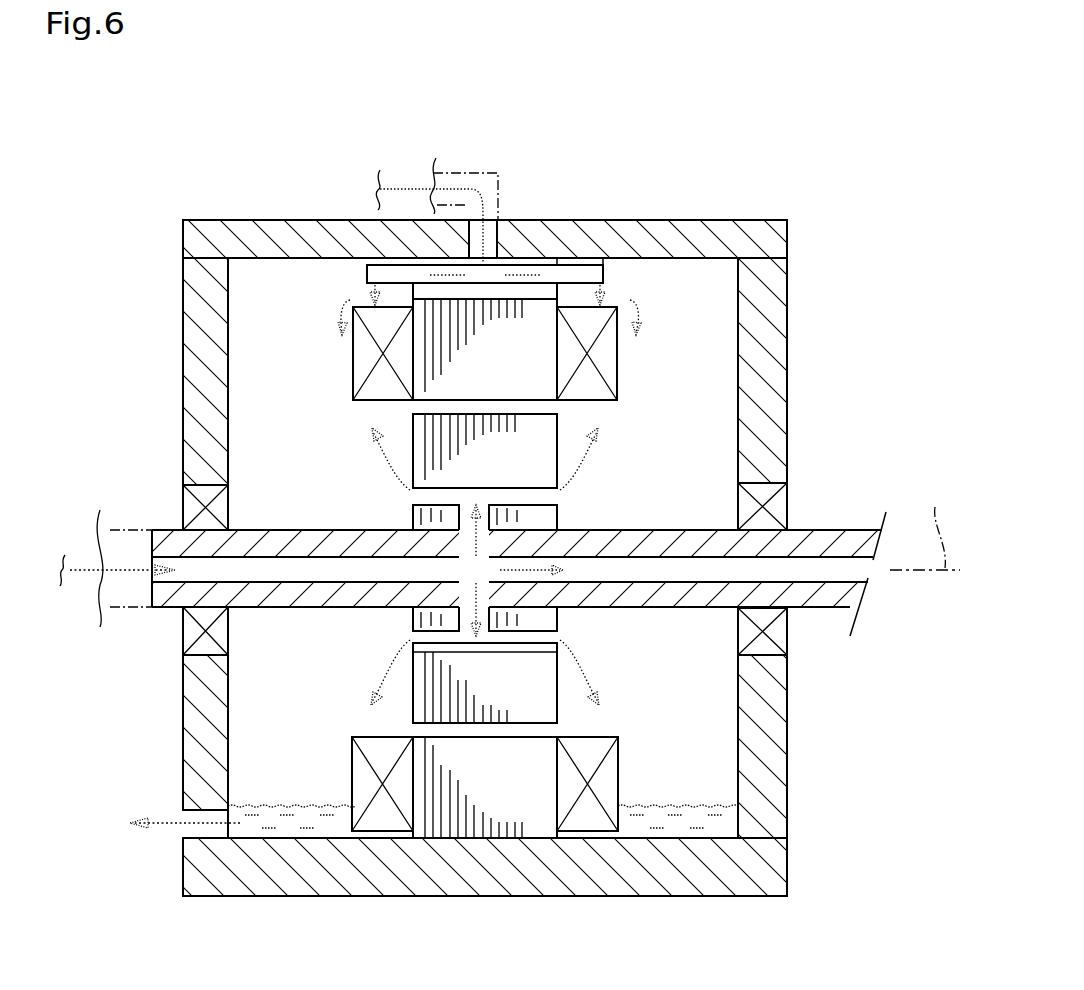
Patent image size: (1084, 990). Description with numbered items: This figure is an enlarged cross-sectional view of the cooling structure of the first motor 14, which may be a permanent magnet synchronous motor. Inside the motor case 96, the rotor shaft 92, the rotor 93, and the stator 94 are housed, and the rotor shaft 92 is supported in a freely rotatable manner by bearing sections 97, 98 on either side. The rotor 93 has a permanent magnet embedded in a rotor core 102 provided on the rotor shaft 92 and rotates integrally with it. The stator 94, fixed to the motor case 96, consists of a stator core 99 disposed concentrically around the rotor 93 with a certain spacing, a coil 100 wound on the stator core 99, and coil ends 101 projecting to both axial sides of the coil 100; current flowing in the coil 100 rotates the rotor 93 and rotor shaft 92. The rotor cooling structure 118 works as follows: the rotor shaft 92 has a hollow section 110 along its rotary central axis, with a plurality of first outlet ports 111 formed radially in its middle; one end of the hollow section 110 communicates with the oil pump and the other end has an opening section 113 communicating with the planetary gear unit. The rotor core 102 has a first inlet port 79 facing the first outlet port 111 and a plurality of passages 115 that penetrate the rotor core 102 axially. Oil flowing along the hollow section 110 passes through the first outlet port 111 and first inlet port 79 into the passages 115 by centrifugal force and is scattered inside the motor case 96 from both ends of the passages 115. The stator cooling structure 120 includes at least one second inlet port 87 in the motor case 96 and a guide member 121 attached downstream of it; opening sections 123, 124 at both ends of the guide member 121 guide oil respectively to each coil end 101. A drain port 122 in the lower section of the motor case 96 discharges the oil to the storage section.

The first motor 14 is at (519, 519).
The first inlet port 79 is at (460, 625).
The second inlet port 87 is at (471, 194).
The rotor shaft 92 is at (510, 560).
The rotor 93 is at (496, 565).
The stator 94 is at (626, 367).
The motor case 96 is at (773, 302).
The bearing section 97 is at (218, 630).
The bearing section 98 is at (755, 640).
The stator core 99 is at (523, 372).
The coil 100 is at (378, 355).
The coil end 101 is at (355, 393).
The rotor core 102 is at (537, 430).
The hollow section 110 is at (342, 575).
The first outlet port 111 is at (490, 548).
The opening section 113 is at (848, 583).
The passage 115 is at (539, 628).
The rotor cooling structure 118 is at (708, 486).
The stator cooling structure 120 is at (480, 551).
The guide member 121 is at (621, 248).
The drain port 122 is at (198, 809).
The opening section 123 is at (496, 234).
The opening section 124 is at (603, 278).